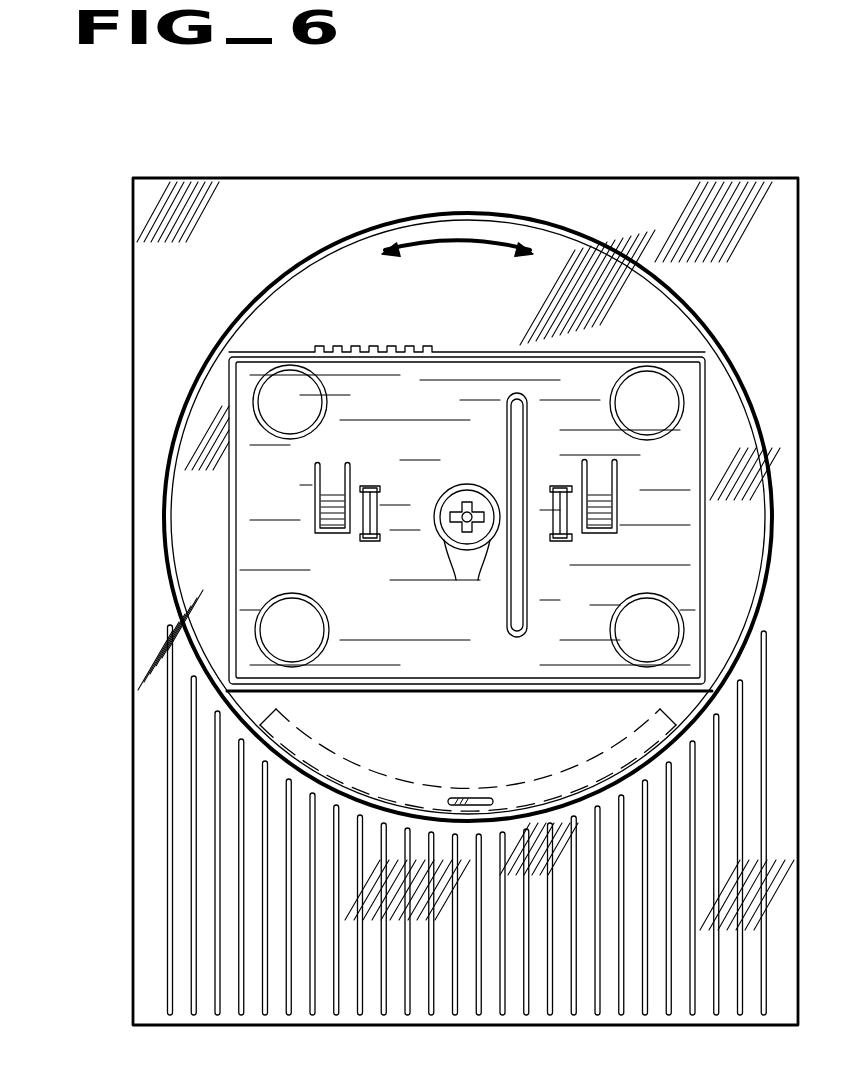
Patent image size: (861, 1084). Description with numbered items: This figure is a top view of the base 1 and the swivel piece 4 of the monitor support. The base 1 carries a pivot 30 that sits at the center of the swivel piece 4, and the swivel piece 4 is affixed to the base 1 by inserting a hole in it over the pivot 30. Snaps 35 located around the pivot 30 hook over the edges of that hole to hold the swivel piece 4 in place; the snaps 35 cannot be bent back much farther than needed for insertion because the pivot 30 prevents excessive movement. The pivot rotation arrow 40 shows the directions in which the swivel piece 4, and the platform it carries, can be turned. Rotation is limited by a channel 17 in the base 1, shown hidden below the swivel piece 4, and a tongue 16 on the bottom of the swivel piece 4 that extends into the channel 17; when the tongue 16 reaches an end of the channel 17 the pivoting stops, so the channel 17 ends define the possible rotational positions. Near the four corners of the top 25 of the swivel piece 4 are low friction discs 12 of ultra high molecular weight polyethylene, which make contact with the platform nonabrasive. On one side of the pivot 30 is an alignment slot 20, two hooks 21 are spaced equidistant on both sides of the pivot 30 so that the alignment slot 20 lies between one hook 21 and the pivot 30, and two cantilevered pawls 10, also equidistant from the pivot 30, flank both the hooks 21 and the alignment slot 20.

The base 1 is at (582, 210).
The swivel piece 4 is at (312, 290).
The pivot rotation arrow 40 is at (472, 240).
The top 25 is at (263, 521).
The low friction discs 12 is at (301, 414).
The cantilevered pawls 10 is at (333, 500).
The hooks 21 is at (370, 487).
The pivot 30 is at (465, 505).
The snaps 35 is at (467, 574).
The alignment slot 20 is at (527, 600).
The channel 17 is at (363, 768).
The tongue 16 is at (470, 798).